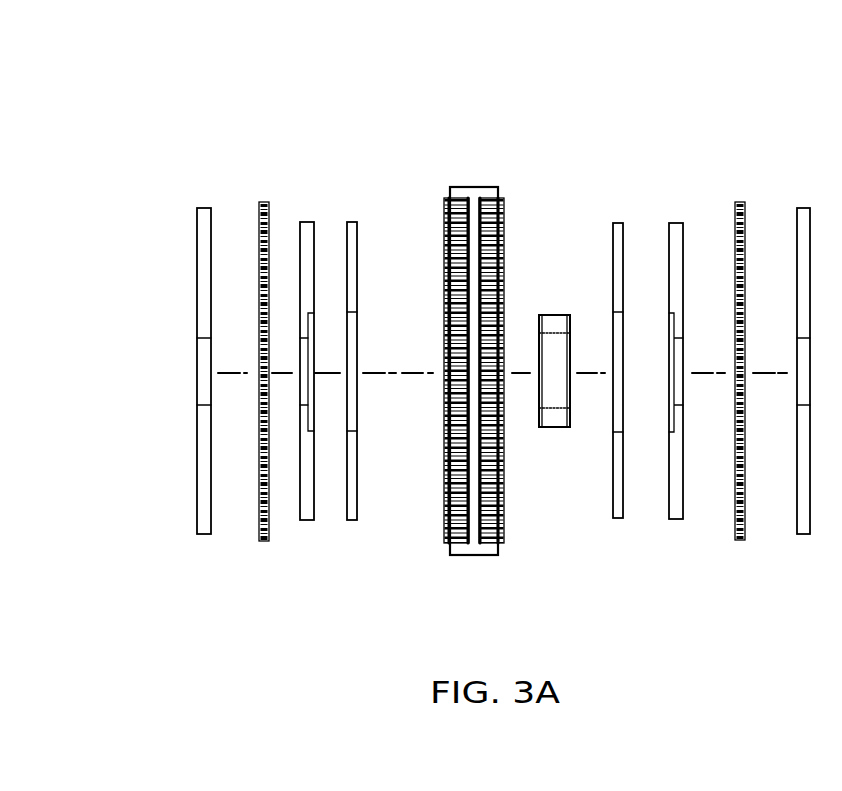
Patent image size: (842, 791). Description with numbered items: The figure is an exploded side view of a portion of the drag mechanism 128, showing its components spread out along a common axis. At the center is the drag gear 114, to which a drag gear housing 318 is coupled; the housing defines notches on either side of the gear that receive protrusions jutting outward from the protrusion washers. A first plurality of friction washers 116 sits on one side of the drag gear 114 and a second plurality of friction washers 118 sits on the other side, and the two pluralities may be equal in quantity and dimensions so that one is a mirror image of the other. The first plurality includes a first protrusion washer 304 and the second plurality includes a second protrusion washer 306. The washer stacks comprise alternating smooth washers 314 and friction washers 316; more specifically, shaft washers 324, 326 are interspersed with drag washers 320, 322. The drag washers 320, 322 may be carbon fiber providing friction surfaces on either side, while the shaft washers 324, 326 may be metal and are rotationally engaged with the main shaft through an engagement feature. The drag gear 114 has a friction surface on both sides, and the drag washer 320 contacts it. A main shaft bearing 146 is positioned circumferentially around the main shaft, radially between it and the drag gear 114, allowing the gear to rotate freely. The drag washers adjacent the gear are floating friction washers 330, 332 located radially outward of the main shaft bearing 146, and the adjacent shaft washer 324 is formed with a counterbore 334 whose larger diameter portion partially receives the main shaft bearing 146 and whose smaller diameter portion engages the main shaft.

The drag gear 114 is at (464, 203).
The first plurality of friction washers 116 is at (294, 138).
The second plurality of friction washers 118 is at (708, 112).
The drag mechanism 128 is at (160, 165).
The main shaft bearing 146 is at (553, 410).
The first protrusion washer 304 is at (263, 541).
The second protrusion washer 306 is at (740, 540).
The smooth washer 314 is at (620, 518).
The friction washer 316 is at (686, 222).
The drag gear housing 318 is at (481, 187).
The drag washer 320 is at (352, 520).
The drag washer 322 is at (263, 202).
The shaft washer 324 is at (307, 520).
The shaft washer 326 is at (197, 483).
The floating friction washer 330 is at (352, 222).
The floating friction washer 332 is at (621, 222).
The counterbore 334 is at (310, 388).